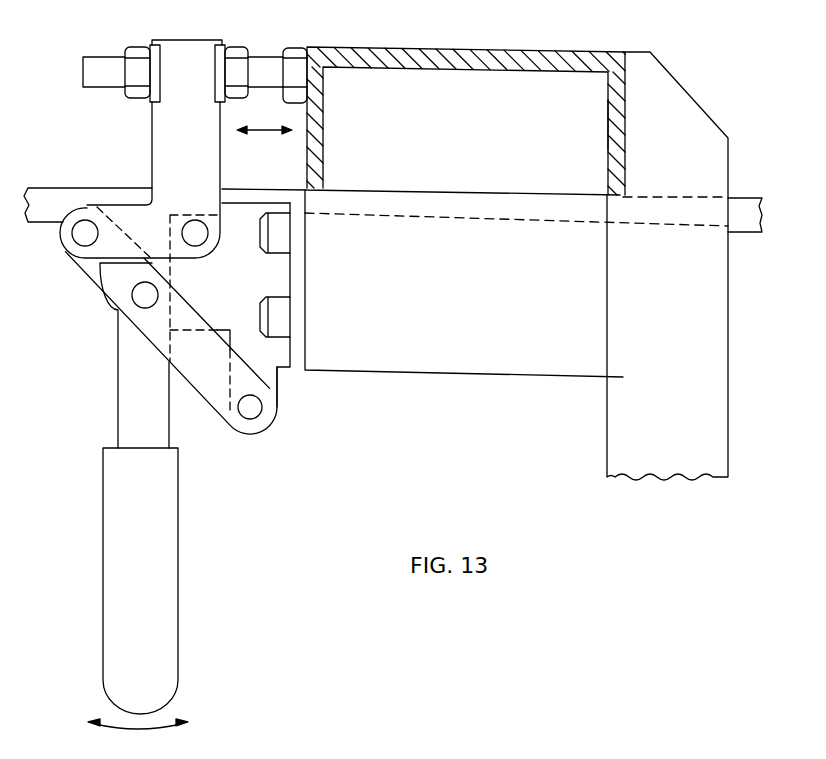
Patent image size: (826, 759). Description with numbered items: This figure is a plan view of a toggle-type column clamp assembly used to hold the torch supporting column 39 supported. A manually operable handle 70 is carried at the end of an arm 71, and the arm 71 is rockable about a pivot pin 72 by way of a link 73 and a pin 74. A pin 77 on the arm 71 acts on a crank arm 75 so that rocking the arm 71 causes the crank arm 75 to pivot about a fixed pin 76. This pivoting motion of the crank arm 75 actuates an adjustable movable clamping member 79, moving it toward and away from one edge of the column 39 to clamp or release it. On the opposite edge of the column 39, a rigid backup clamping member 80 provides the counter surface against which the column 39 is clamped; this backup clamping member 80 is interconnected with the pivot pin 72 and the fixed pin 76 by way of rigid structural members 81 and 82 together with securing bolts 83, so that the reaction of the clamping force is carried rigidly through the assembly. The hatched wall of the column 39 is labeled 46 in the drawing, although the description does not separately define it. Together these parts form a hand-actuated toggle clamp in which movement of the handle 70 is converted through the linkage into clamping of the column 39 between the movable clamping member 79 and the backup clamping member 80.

The column 39 is at (617, 148).
The channel wall 46 is at (618, 107).
The manually operable handle 70 is at (162, 572).
The arm 71 is at (157, 422).
The pivot pin 72 is at (254, 412).
The link 73 is at (217, 395).
The pin 74 is at (134, 296).
The crank arm 75 is at (163, 147).
The fixed pin 76 is at (191, 246).
The pin 77 is at (74, 250).
The adjustable movable clamping member 79 is at (262, 68).
The rigid backup clamping member 80 is at (677, 106).
The rigid structural member 81 is at (270, 352).
The rigid structural member 82 is at (380, 360).
The securing bolts 83 is at (282, 305).